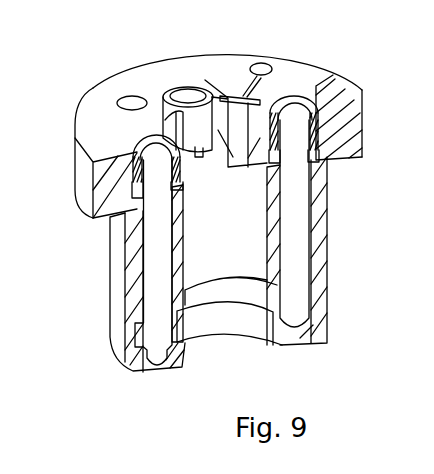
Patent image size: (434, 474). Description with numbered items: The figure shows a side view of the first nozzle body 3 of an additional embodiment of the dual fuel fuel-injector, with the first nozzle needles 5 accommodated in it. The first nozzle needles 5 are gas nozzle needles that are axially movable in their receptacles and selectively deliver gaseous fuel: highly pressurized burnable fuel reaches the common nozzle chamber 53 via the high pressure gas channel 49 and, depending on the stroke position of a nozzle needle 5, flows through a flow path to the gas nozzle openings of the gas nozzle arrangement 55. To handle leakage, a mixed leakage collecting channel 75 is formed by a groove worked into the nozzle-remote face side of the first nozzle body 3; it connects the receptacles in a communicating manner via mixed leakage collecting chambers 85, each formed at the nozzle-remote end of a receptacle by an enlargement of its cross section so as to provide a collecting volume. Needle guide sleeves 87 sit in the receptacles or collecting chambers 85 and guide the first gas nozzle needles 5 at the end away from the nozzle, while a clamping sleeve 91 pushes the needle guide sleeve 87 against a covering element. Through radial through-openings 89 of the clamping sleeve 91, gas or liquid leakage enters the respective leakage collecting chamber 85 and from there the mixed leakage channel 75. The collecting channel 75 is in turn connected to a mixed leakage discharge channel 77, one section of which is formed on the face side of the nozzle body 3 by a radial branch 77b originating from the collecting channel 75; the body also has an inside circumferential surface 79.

The first nozzle body 3 is at (137, 86).
The first nozzle needle 5 is at (165, 254).
The high pressure gas channel 49 is at (127, 100).
The nozzle chamber 53 is at (223, 295).
The gas nozzle arrangement 55 is at (312, 327).
The mixed leakage collecting channel 75 is at (228, 92).
The mixed leakage discharge channel 77 is at (240, 74).
The radial branch 77b is at (263, 80).
The inside circumferential surface 79 is at (183, 250).
The mixed leakage collecting chamber 85 is at (239, 161).
The needle guide sleeve 87 is at (164, 90).
The through-opening 89 is at (178, 183).
The clamping sleeve 91 is at (131, 186).